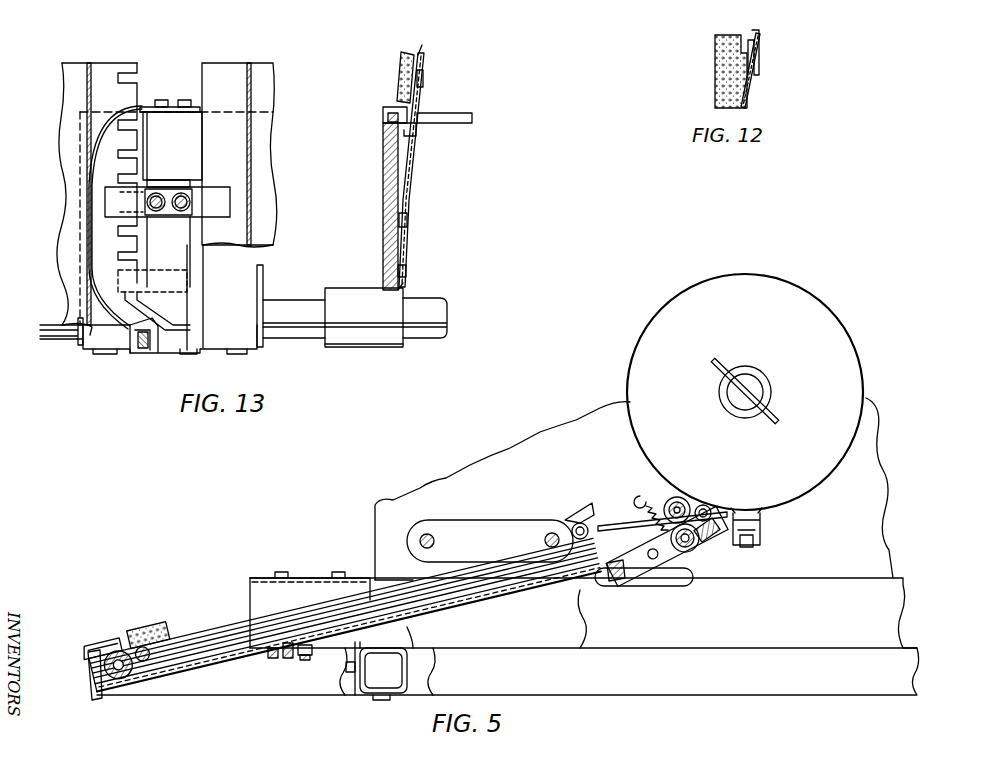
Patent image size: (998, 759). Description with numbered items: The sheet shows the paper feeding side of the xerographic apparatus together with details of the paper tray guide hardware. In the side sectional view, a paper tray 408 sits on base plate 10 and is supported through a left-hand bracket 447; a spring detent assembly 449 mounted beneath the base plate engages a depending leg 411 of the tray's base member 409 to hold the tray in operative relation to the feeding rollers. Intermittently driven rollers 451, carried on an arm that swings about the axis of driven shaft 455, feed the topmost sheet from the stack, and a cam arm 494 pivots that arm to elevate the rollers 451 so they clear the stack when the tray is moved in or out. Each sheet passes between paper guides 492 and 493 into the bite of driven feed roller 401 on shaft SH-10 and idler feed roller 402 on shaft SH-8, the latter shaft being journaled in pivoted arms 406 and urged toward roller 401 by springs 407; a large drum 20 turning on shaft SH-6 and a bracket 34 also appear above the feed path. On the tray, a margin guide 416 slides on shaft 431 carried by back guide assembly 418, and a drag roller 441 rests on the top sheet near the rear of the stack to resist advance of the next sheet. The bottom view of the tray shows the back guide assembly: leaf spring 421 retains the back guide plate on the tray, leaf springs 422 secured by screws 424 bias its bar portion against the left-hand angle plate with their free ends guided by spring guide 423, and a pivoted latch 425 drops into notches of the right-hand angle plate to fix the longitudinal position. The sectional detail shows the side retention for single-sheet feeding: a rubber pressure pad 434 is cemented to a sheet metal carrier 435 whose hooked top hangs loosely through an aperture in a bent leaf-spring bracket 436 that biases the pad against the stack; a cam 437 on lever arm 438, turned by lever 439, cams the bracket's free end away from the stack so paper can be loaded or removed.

In FIG. 5, the base plate 10 is at (905, 618).
In FIG. 5, the reel disk 20 is at (848, 333).
In FIG. 5, the bracket 34 is at (758, 530).
In FIG. 5, the shaft SH-6 is at (775, 393).
In FIG. 5, the shaft SH-8 is at (692, 549).
In FIG. 5, the shaft SH-10 is at (683, 497).
In FIG. 5, the feed roller 401 is at (668, 497).
In FIG. 5, the feed roller 402 is at (693, 574).
In FIG. 5, the arms 406 is at (666, 583).
In FIG. 5, the springs 407 is at (638, 500).
In FIG. 5, the paper tray 408 is at (167, 620).
In FIG. 5, the base member 409 is at (185, 690).
In FIG. 5, the depending leg 411 is at (292, 658).
In FIG. 5, the margin guide 416 is at (172, 632).
In FIG. 5, the back guide assembly 418 is at (90, 683).
In FIG. 13, the leaf spring 421 is at (221, 188).
In FIG. 13, the leaf springs 422 is at (108, 141).
In FIG. 13, the spring guide 423 is at (148, 348).
In FIG. 13, the screws 424 is at (400, 222).
In FIG. 13, the latch 425 is at (177, 310).
In FIG. 13, the shaft 431 is at (303, 305).
In FIG. 13, the pressure pads 434 is at (400, 68).
In FIG. 12, the pressure pads 434 is at (714, 65).
In FIG. 5, the pressure pads 434 is at (243, 620).
In FIG. 13, the sheet metal carrier 435 is at (431, 41).
In FIG. 12, the sheet metal carrier 435 is at (748, 90).
In FIG. 13, the bracket 436 is at (410, 160).
In FIG. 12, the bracket 436 is at (760, 64).
In FIG. 13, the cam 437 is at (410, 131).
In FIG. 13, the lever arm 438 is at (388, 118).
In FIG. 13, the lever 439 is at (462, 113).
In FIG. 5, the drag roller 441 is at (140, 652).
In FIG. 5, the left-hand bracket 447 is at (298, 577).
In FIG. 5, the spring detent assembly 449 is at (255, 658).
In FIG. 5, the rollers 451 is at (543, 520).
In FIG. 5, the driven shaft 455 is at (426, 536).
In FIG. 5, the paper guide 492 is at (632, 552).
In FIG. 5, the paper guide 493 is at (645, 522).
In FIG. 5, the cam arm 494 is at (578, 512).